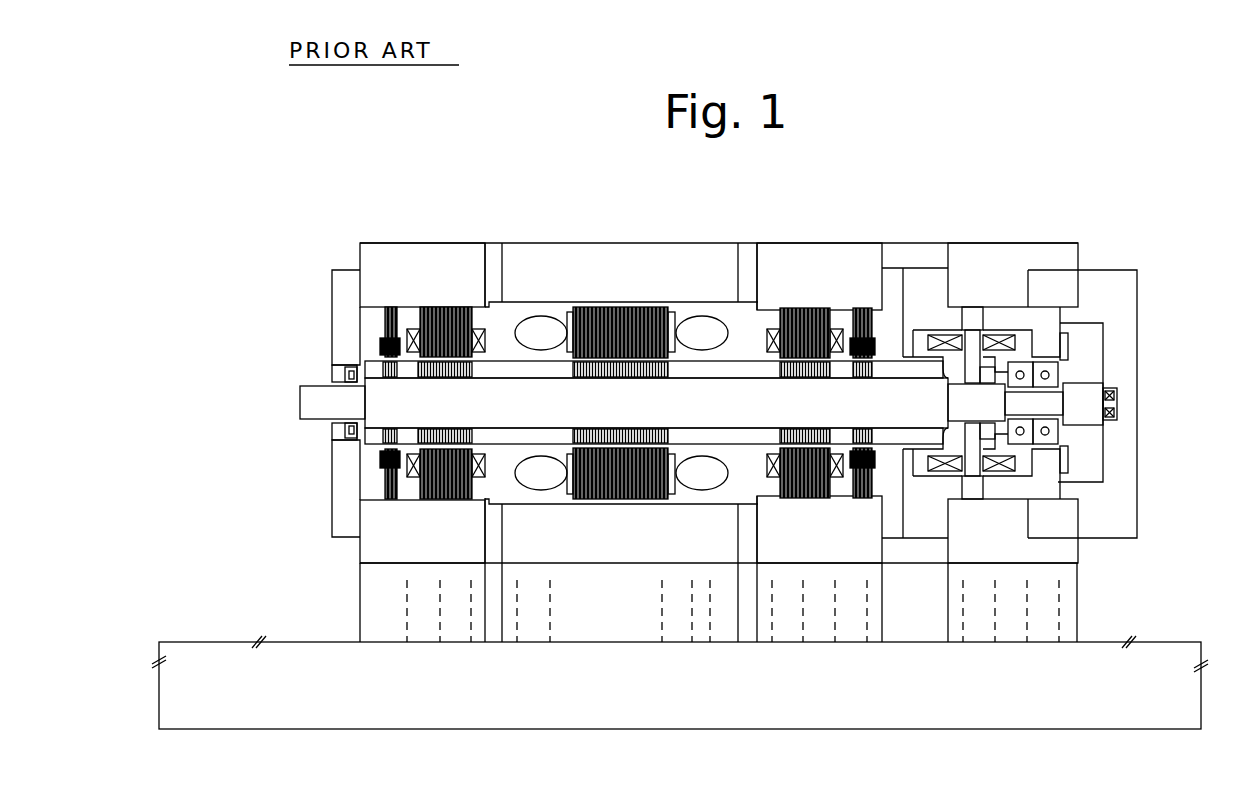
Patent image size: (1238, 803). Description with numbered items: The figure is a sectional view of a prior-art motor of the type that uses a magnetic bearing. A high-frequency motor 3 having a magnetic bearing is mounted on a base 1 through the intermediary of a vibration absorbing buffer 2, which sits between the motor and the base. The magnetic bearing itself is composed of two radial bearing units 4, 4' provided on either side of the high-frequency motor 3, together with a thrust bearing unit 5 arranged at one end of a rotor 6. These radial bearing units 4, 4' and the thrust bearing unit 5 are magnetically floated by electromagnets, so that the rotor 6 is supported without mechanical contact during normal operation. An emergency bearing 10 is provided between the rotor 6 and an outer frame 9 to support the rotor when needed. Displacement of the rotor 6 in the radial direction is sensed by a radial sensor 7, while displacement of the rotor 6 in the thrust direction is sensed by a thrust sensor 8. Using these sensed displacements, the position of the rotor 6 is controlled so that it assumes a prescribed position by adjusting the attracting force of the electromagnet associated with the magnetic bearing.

The base 1 is at (1108, 650).
The vibration absorbing buffer 2 is at (1062, 597).
The high-frequency motor 3 is at (651, 262).
The radial bearing unit 4 is at (422, 377).
The radial bearing unit 4' is at (819, 377).
The thrust bearing unit 5 is at (1026, 243).
The rotor 6 is at (300, 405).
The radial sensor 7 is at (488, 334).
The thrust sensor 8 is at (1118, 405).
The outer frame 9 is at (1125, 300).
The emergency bearing 10 is at (345, 372).